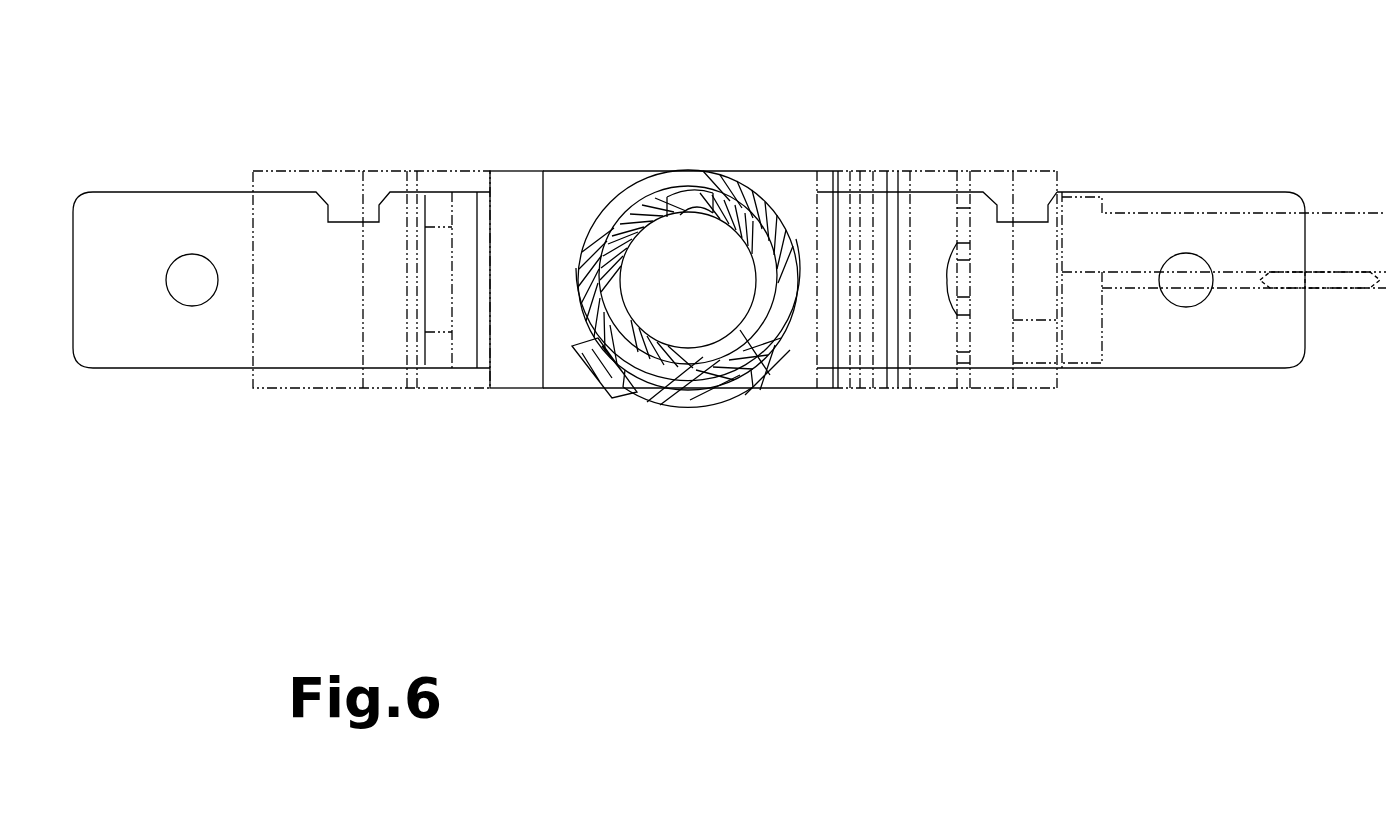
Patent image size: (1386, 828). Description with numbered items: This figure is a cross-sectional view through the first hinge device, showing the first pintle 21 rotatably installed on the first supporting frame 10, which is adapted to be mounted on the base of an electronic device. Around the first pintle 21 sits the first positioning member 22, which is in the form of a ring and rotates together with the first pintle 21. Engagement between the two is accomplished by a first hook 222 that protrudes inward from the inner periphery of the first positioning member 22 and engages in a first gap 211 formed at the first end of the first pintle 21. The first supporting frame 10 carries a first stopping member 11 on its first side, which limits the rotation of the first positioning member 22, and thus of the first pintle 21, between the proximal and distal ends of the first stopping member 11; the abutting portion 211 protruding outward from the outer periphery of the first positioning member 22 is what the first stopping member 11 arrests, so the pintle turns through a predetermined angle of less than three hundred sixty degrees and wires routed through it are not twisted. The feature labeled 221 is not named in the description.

The first supporting frame 10 is at (163, 363).
The first stopping member 11 is at (610, 378).
The first pintle 21 is at (745, 217).
The first gap 211 is at (690, 207).
The first positioning member 22 is at (630, 207).
The first tab 221 is at (653, 380).
The first hook 222 is at (680, 358).